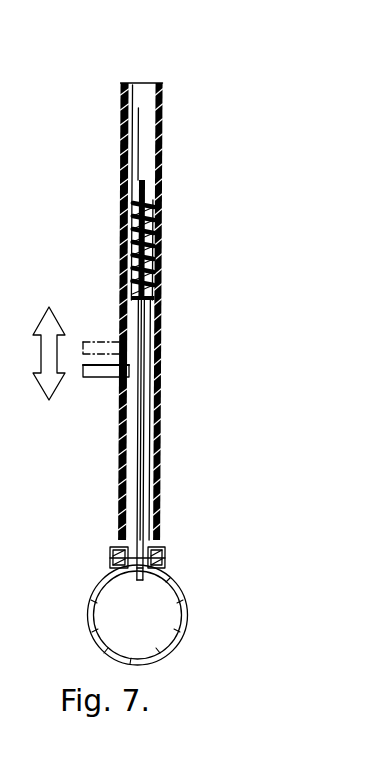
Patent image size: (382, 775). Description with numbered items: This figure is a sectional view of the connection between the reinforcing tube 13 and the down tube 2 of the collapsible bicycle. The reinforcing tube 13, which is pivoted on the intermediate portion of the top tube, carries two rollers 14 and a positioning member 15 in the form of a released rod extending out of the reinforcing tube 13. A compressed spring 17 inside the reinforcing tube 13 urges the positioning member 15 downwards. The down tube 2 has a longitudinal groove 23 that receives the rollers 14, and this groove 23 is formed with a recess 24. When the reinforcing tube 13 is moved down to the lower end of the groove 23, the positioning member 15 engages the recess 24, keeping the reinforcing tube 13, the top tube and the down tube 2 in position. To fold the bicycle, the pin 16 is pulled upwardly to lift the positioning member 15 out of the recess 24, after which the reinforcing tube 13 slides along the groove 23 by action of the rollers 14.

The down tube 2 is at (186, 605).
The reinforcing tube 13 is at (173, 311).
The rollers 14 is at (166, 552).
The positioning member 15 is at (138, 418).
The pin 16 is at (85, 346).
The compressed spring 17 is at (160, 243).
The longitudinal groove 23 is at (114, 547).
The recess 24 is at (110, 562).